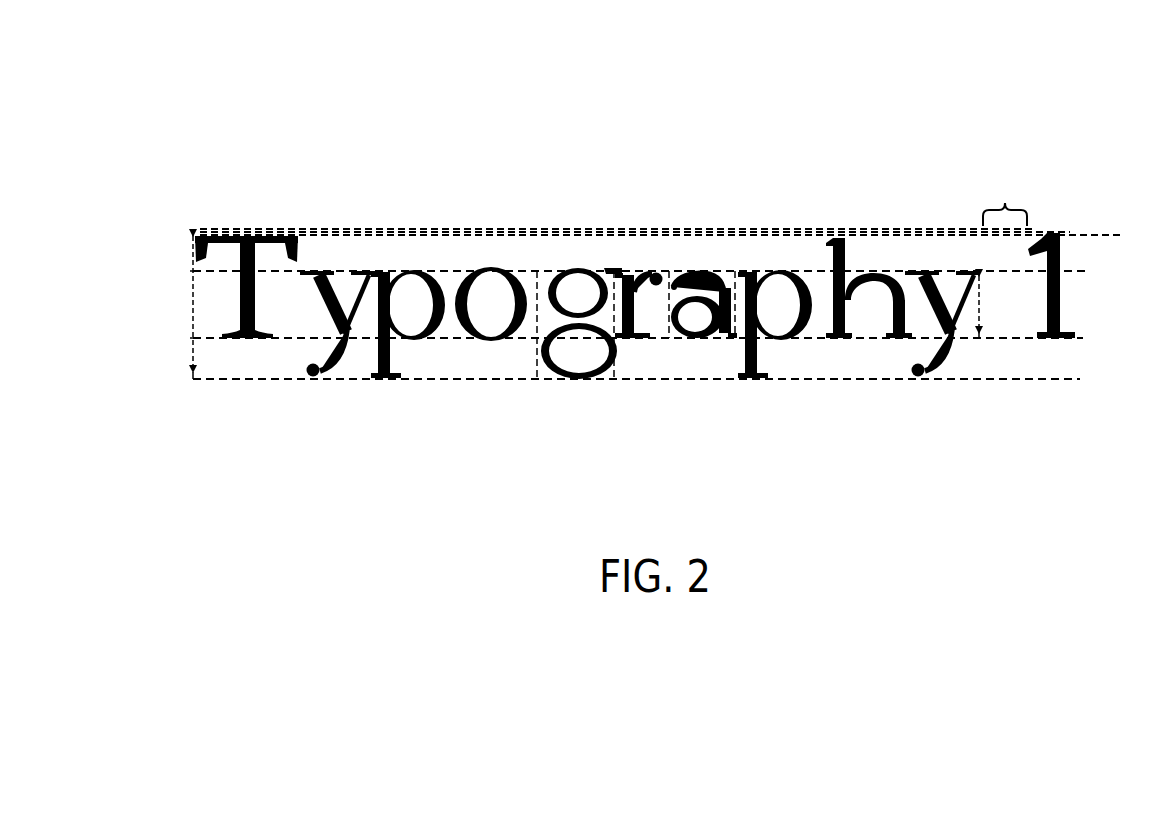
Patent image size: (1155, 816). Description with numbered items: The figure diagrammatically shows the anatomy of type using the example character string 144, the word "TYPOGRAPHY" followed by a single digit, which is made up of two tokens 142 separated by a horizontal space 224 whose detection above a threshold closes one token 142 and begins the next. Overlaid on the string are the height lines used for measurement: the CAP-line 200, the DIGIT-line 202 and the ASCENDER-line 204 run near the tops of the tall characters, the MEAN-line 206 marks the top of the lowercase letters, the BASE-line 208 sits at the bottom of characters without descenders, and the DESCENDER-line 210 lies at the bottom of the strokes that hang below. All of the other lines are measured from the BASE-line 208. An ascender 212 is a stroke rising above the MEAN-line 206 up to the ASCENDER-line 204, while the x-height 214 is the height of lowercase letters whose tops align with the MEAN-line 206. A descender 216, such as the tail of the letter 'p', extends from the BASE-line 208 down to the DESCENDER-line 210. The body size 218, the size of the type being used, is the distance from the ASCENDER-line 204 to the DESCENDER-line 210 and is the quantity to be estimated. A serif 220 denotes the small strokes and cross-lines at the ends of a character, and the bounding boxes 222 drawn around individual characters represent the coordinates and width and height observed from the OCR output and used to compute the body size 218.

The token 142 is at (1073, 402).
The character string 144 is at (897, 139).
The CAP-line 200 is at (1118, 235).
The DIGIT-line 202 is at (1082, 232).
The ASCENDER-line 204 is at (1043, 230).
The MEAN-line 206 is at (1073, 272).
The BASE-line 208 is at (1068, 340).
The DESCENDER-line 210 is at (993, 381).
The ascender 212 is at (845, 236).
The x-height 214 is at (982, 300).
The descender 216 is at (755, 345).
The body size 218 is at (195, 345).
The serif 220 is at (268, 339).
The bounding box 222 is at (699, 262).
The space 224 is at (1005, 199).